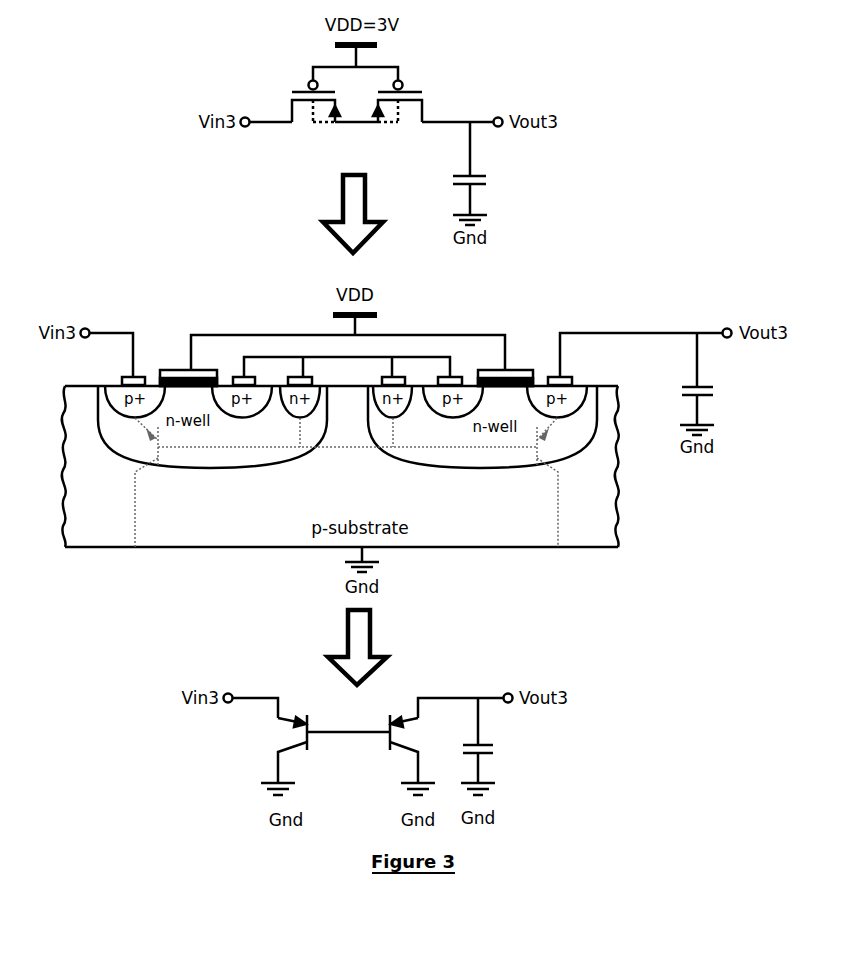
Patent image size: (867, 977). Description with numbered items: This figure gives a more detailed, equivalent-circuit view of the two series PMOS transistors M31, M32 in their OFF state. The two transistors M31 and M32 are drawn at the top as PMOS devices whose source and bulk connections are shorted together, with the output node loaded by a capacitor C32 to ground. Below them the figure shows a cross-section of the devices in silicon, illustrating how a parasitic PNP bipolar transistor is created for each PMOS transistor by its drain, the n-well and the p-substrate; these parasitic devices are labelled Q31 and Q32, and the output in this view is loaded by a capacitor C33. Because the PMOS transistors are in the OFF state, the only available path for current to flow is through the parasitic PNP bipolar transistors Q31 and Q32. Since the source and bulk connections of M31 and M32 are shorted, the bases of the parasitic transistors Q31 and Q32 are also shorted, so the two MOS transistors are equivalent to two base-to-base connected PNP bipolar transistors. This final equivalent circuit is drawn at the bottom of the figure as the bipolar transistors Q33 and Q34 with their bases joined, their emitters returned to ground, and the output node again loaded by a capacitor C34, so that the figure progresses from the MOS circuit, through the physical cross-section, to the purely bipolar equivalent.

The PMOS transistor M31 is at (316, 122).
The PMOS transistor M32 is at (397, 122).
The capacitor C32 is at (492, 168).
The capacitor C33 is at (719, 379).
The capacitor C34 is at (501, 740).
The parasitic PNP bipolar transistor Q31 is at (128, 482).
The parasitic PNP bipolar transistor Q32 is at (564, 482).
The bipolar transistor Q33 is at (278, 749).
The bipolar transistor Q34 is at (416, 749).